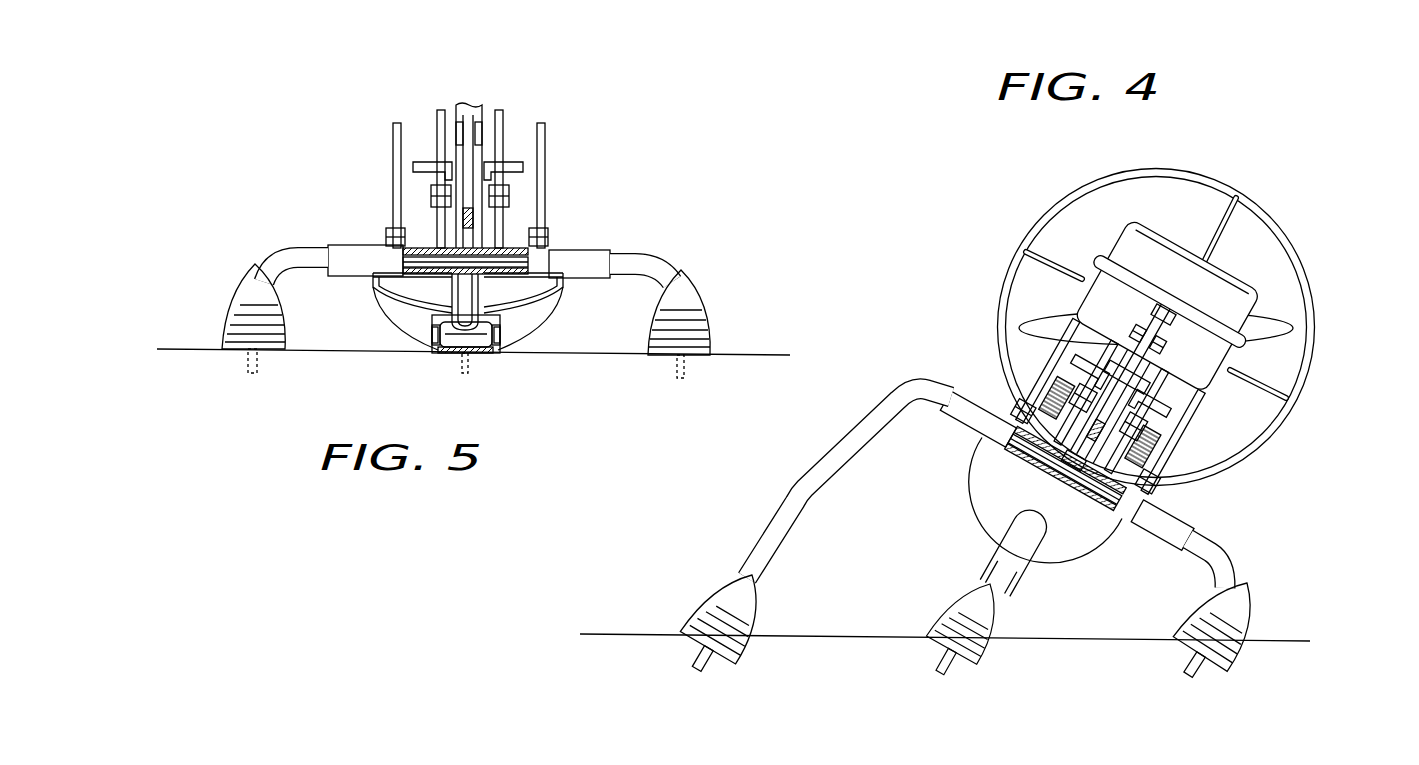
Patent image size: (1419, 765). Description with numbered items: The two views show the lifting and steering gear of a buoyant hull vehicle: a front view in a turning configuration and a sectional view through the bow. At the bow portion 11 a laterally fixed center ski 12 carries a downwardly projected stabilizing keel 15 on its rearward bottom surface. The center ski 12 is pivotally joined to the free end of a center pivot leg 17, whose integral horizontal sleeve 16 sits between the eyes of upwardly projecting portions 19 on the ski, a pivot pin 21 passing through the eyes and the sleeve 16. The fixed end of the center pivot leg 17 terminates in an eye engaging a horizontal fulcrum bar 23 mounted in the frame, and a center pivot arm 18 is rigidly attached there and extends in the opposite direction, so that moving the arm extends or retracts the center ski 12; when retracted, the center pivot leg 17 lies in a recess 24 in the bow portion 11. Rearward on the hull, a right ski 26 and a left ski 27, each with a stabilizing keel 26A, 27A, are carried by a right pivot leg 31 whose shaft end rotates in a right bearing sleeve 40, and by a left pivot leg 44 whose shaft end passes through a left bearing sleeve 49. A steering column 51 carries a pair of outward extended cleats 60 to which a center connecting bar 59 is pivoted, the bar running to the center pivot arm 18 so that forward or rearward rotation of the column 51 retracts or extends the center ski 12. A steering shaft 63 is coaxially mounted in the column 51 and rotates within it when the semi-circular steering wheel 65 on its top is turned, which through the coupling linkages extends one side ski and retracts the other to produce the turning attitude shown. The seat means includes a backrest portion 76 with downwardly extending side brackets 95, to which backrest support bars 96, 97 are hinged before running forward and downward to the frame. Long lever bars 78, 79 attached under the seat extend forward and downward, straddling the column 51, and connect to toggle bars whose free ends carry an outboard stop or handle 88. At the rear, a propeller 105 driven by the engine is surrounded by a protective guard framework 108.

In FIG. 5, the bow portion 11 is at (553, 307).
In FIG. 5, the center lifting support member 12 is at (453, 352).
In FIG. 4, the center lifting support member 12 is at (970, 613).
In FIG. 5, the stabilizing keel 15 is at (470, 373).
In FIG. 4, the stabilizing keel 15 is at (947, 672).
In FIG. 5, the sleeve 16 is at (473, 340).
In FIG. 5, the center pivot leg 17 is at (463, 298).
In FIG. 4, the center pivot leg 17 is at (1030, 575).
In FIG. 4, the center pivot arm 18 is at (1080, 458).
In FIG. 5, the upwardly projecting portions 19 is at (437, 348).
In FIG. 5, the pivot pin 21 is at (507, 337).
In FIG. 5, the fulcrum bar 23 is at (403, 277).
In FIG. 4, the fulcrum bar 23 is at (1082, 490).
In FIG. 5, the recess 24 is at (500, 320).
In FIG. 4, the recess 24 is at (1000, 547).
In FIG. 5, the right ski 26 is at (242, 307).
In FIG. 4, the right ski 26 is at (727, 605).
In FIG. 5, the stabilizing keel 26A is at (250, 373).
In FIG. 5, the left ski 27 is at (695, 308).
In FIG. 4, the left ski 27 is at (1228, 610).
In FIG. 5, the stabilizing keel 27A is at (683, 378).
In FIG. 5, the right pivot leg 31 is at (300, 253).
In FIG. 4, the right pivot leg 31 is at (807, 485).
In FIG. 5, the right bearing sleeve 40 is at (368, 248).
In FIG. 4, the right bearing sleeve 40 is at (967, 417).
In FIG. 5, the left pivot leg 44 is at (641, 273).
In FIG. 4, the left pivot leg 44 is at (1215, 550).
In FIG. 5, the left bearing sleeve 49 is at (587, 255).
In FIG. 4, the left bearing sleeve 49 is at (1175, 518).
In FIG. 5, the steering column 51 is at (482, 112).
In FIG. 4, the steering column 51 is at (1162, 323).
In FIG. 4, the center connecting bar 59 is at (1133, 383).
In FIG. 4, the cleats 60 is at (1158, 350).
In FIG. 4, the steering shaft 63 is at (1163, 303).
In FIG. 4, the steering wheel 65 is at (1157, 288).
In FIG. 4, the backrest portion 76 is at (1240, 293).
In FIG. 5, the right lever bar 78 is at (437, 125).
In FIG. 4, the right lever bar 78 is at (1086, 392).
In FIG. 5, the left lever bar 79 is at (500, 118).
In FIG. 4, the left lever bar 79 is at (1136, 421).
In FIG. 5, the stop or handle 88 is at (423, 163).
In FIG. 4, the stop or handle 88 is at (1043, 420).
In FIG. 4, the side brackets 95 is at (1187, 433).
In FIG. 5, the backrest support bar 96 is at (395, 190).
In FIG. 4, the backrest support bar 96 is at (1027, 392).
In FIG. 5, the backrest support bar 97 is at (542, 197).
In FIG. 4, the backrest support bar 97 is at (1163, 447).
In FIG. 4, the propeller 105 is at (1275, 322).
In FIG. 4, the guard framework 108 is at (1277, 222).